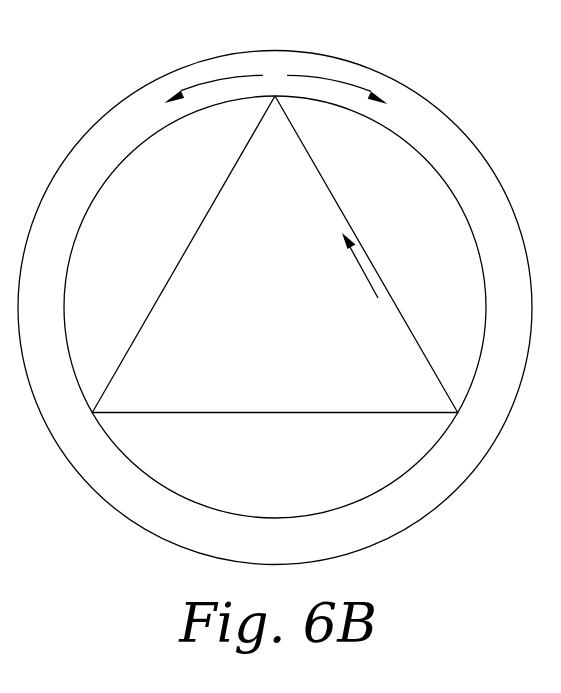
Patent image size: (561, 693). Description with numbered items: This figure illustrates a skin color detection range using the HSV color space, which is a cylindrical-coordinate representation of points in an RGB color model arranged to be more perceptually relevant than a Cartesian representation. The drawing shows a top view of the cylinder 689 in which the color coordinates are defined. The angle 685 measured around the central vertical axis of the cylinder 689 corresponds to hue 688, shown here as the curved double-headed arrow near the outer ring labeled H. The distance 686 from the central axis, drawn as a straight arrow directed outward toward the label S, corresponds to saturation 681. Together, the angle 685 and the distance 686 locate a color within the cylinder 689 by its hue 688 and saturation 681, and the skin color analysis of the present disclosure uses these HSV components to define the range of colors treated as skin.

The cylinder 689 is at (466, 132).
The saturation 681 is at (378, 325).
The angle 685 is at (338, 82).
The hue 688 is at (277, 66).
The distance 686 is at (358, 268).